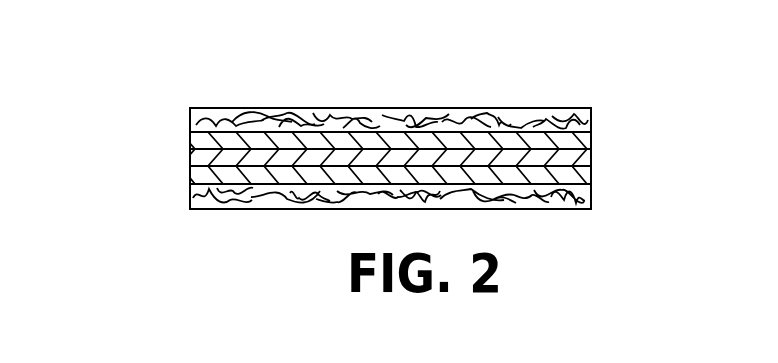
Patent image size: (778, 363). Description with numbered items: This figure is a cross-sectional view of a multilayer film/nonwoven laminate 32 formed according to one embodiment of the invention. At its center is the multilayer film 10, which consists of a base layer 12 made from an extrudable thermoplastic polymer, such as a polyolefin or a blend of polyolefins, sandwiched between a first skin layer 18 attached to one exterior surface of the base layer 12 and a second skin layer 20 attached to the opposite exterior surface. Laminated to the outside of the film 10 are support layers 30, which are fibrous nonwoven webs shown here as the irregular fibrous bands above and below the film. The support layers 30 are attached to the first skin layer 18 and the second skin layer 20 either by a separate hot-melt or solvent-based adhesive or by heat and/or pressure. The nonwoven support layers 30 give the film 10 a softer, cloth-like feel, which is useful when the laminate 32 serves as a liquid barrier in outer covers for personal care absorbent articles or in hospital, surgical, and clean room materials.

The multilayer film 10 is at (150, 158).
The base layer 12 is at (592, 154).
The first skin layer 18 is at (592, 142).
The second skin layer 20 is at (592, 175).
The support layer 30 is at (574, 108).
The multilayer film/nonwoven laminate 32 is at (262, 90).